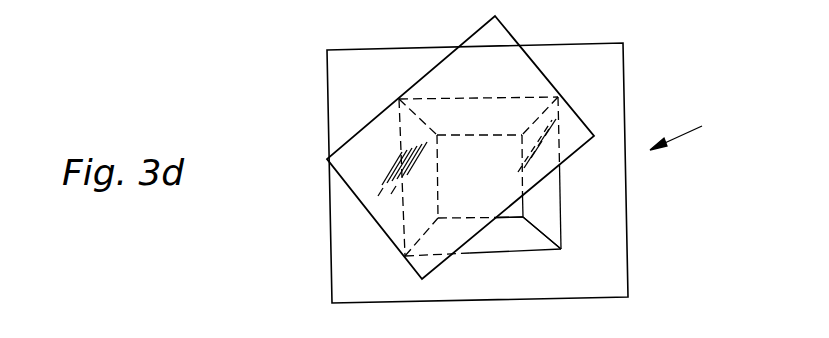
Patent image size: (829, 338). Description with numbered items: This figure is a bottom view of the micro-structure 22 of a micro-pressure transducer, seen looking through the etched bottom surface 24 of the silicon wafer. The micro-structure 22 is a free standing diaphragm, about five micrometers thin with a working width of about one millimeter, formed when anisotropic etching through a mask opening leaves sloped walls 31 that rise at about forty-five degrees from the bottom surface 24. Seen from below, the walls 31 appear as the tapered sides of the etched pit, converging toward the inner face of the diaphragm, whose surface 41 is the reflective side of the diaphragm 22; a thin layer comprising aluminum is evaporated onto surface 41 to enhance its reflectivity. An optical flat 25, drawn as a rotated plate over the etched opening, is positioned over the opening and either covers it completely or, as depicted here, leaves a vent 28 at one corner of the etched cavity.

The micro-structure 22 is at (691, 133).
The bottom surface 24 is at (380, 62).
The optical flat 25 is at (352, 140).
The diaphragm surface 41 is at (468, 147).
The walls 31 is at (554, 213).
The vent 28 is at (514, 212).